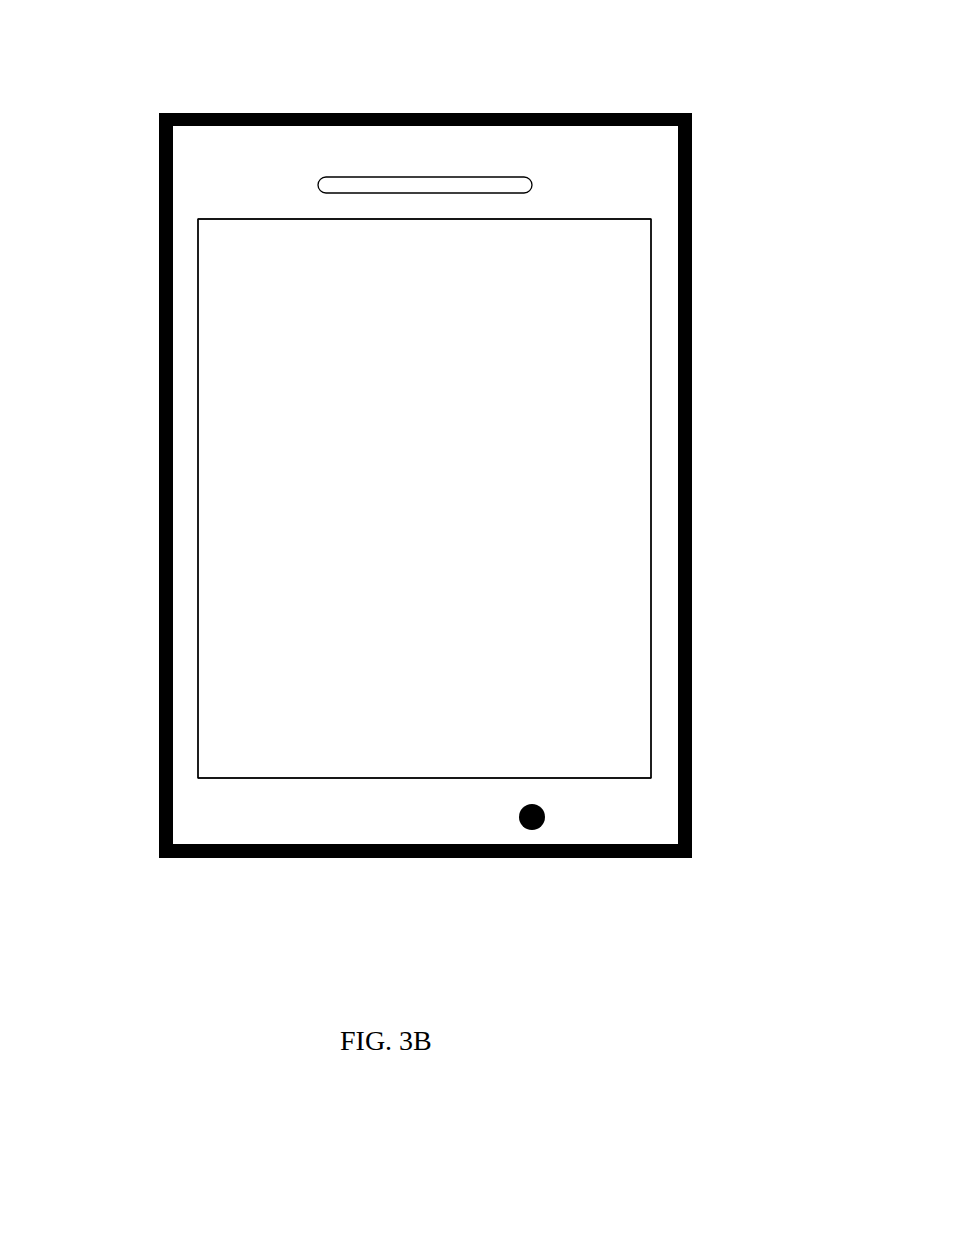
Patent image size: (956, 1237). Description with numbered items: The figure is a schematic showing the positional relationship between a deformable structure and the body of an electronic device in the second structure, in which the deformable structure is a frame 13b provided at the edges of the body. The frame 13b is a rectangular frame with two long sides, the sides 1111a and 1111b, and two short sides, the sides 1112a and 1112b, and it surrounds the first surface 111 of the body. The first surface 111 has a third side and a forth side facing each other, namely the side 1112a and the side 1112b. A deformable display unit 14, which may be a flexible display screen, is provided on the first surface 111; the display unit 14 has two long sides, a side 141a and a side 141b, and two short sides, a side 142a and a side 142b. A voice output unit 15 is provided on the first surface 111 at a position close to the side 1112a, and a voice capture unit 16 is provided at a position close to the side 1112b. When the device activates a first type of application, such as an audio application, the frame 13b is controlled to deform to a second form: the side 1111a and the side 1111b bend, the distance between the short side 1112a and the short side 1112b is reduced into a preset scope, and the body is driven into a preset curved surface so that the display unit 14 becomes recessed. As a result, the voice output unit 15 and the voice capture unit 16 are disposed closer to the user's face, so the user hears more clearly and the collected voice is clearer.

The first surface 111 is at (200, 157).
The side 1111a is at (158, 678).
The side 1111b is at (692, 695).
The side 1112a is at (310, 113).
The side 1112b is at (306, 858).
The frame 13b is at (692, 857).
The display unit 14 is at (651, 219).
The side 141a is at (198, 497).
The side 141b is at (652, 497).
The side 142a is at (555, 219).
The side 142b is at (423, 778).
The voice output unit 15 is at (424, 184).
The voice capture unit 16 is at (537, 832).